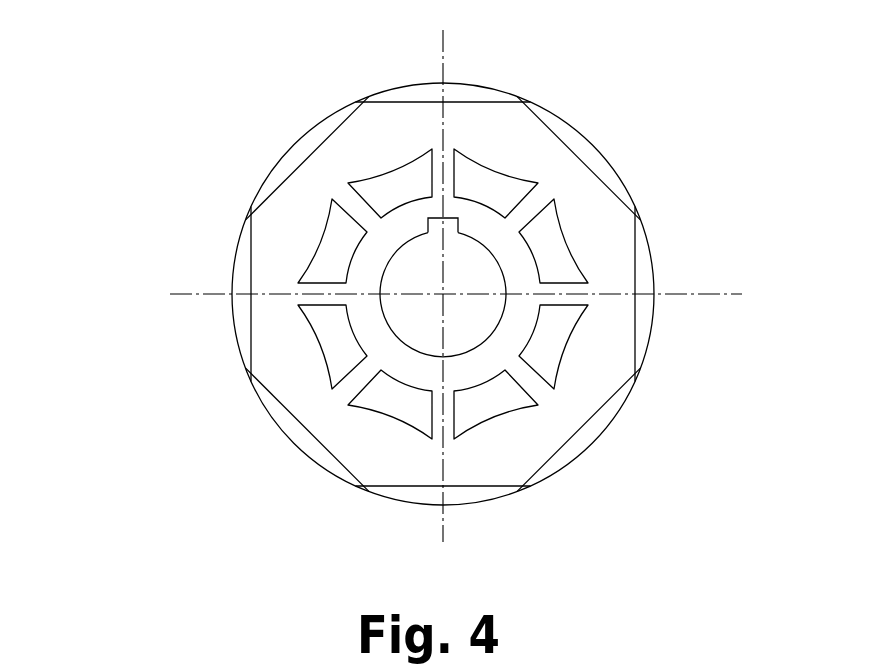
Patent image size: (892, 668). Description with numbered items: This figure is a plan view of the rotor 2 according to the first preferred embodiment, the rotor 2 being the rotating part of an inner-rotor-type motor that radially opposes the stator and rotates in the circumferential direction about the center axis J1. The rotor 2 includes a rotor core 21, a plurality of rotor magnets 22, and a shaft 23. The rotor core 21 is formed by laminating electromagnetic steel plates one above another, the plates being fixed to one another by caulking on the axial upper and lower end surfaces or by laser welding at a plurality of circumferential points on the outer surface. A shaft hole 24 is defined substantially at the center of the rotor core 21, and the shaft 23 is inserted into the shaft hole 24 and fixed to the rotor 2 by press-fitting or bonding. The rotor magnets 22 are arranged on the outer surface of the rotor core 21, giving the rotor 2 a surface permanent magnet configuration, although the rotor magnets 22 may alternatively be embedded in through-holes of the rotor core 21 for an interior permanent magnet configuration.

The rotor 2 is at (158, 80).
The rotor core 21 is at (377, 125).
The rotor magnets 22 is at (281, 176).
The shaft 23 is at (480, 273).
The shaft hole 24 is at (486, 247).
The center axis J1 is at (443, 294).